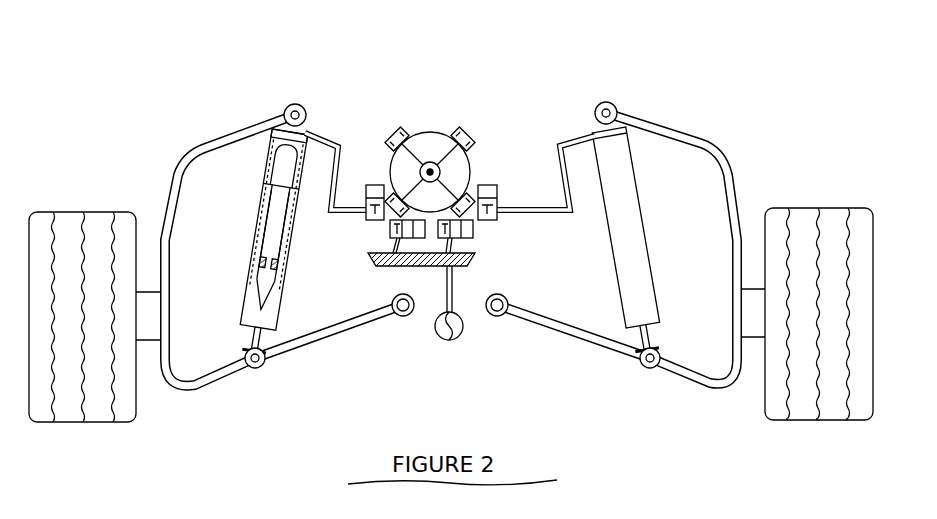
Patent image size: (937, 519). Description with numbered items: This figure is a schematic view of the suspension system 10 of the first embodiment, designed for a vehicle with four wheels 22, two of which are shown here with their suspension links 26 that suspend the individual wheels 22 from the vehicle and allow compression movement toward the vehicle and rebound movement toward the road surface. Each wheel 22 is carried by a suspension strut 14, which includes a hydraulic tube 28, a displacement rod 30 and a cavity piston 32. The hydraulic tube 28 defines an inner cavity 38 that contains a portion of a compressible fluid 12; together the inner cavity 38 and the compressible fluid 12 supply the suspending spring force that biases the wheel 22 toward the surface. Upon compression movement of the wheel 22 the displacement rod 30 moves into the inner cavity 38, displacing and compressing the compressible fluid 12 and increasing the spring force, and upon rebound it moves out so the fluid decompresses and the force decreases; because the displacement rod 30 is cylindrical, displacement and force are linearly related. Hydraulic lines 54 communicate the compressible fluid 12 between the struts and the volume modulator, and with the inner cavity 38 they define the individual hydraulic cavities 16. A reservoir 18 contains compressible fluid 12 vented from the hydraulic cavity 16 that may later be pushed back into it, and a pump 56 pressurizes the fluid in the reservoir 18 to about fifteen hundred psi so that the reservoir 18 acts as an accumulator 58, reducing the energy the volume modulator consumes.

The suspension system 10 is at (480, 99).
The compressible fluid 12 is at (296, 200).
The suspension strut 14 is at (258, 186).
The hydraulic cavity 16 is at (345, 147).
The reservoir 18 is at (470, 253).
The wheel 22 is at (115, 422).
The suspension link 26 is at (178, 183).
The hydraulic tube 28 is at (268, 133).
The displacement rod 30 is at (250, 253).
The cavity piston 32 is at (255, 210).
The inner cavity 38 is at (330, 143).
The hydraulic line 54 is at (350, 215).
The pump 56 is at (458, 338).
The accumulator 58 is at (478, 258).